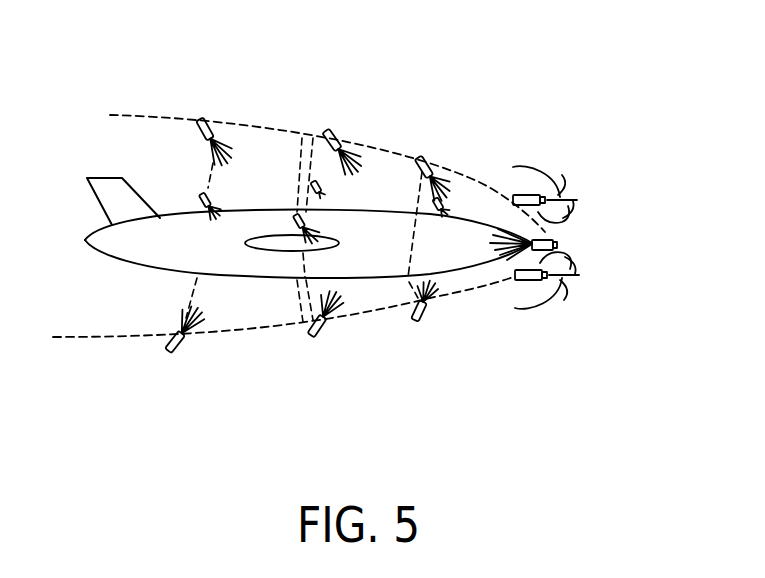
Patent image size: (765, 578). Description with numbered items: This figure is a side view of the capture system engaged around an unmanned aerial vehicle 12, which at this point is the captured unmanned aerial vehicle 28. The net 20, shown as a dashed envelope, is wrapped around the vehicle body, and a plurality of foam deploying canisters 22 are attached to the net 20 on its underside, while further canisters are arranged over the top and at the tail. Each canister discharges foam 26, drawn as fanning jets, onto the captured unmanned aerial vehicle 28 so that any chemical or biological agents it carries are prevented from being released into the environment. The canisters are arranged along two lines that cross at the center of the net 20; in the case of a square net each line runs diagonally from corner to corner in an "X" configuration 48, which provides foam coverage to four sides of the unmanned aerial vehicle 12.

The unmanned aerial vehicle 12 is at (292, 238).
The captured unmanned aerial vehicle 28 is at (140, 264).
The net 20 is at (128, 115).
The foam deploying canisters 22 is at (170, 353).
The foam 26 is at (234, 129).
The "X" configuration 48 is at (512, 98).